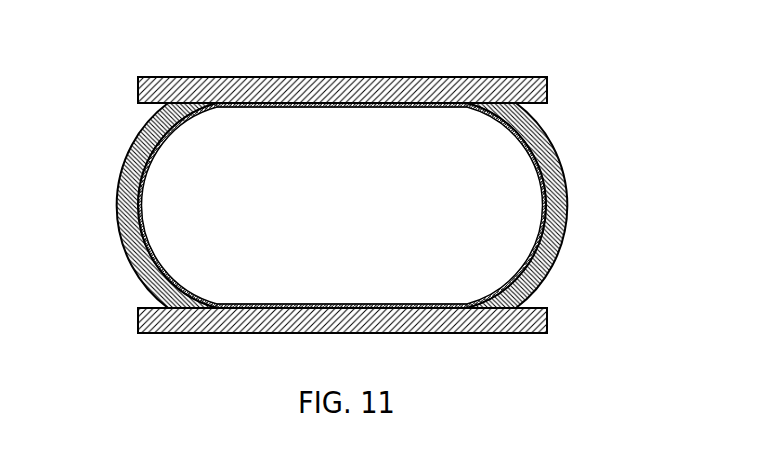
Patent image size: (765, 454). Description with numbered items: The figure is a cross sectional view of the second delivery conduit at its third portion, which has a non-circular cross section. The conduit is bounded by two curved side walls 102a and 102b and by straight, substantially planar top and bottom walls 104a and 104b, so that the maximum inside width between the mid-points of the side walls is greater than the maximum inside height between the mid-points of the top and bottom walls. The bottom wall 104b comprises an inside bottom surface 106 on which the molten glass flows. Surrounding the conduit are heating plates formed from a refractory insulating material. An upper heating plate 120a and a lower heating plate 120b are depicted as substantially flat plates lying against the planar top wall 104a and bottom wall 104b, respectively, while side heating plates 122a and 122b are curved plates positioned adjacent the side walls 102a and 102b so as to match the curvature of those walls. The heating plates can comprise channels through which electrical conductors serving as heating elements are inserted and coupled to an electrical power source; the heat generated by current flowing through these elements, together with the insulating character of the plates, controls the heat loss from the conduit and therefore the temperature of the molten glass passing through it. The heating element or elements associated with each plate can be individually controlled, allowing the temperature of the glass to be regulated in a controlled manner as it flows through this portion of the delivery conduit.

The curved side wall 102a is at (137, 197).
The curved side wall 102b is at (558, 228).
The top wall 104a is at (265, 104).
The bottom wall 104b is at (430, 307).
The inside bottom surface 106 is at (316, 305).
The upper heating plate 120a is at (522, 77).
The lower heating plate 120b is at (195, 333).
The side heating plate 122a is at (122, 184).
The side heating plate 122b is at (560, 169).